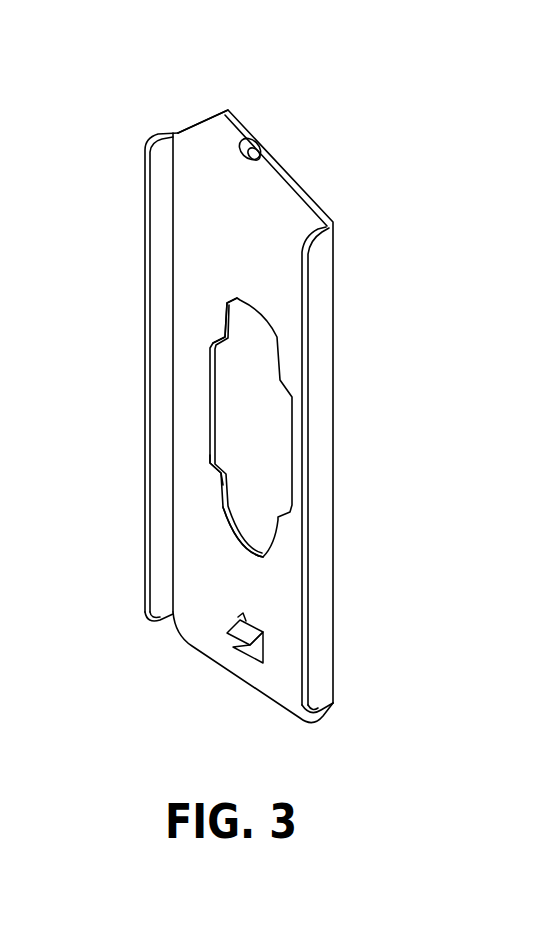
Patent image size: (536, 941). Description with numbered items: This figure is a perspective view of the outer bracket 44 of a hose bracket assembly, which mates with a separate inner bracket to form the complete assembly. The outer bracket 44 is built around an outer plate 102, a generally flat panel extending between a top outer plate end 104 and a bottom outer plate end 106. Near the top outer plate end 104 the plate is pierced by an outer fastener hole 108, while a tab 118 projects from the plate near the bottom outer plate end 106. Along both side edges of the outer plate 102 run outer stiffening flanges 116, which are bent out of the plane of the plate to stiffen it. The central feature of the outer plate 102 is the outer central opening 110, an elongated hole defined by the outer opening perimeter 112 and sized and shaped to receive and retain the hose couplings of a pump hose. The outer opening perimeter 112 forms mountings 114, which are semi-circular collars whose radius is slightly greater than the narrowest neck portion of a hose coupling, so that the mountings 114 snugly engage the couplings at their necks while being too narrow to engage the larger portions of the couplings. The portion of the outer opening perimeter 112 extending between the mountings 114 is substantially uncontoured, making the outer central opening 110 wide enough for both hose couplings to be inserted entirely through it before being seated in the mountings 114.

The outer bracket 44 is at (340, 100).
The outer plate 102 is at (292, 209).
The top outer plate end 104 is at (209, 133).
The bottom outer plate end 106 is at (193, 633).
The outer fastener hole 108 is at (253, 150).
The outer central opening 110 is at (226, 408).
The outer opening perimeter 112 is at (210, 465).
The mountings 114 is at (237, 298).
The outer stiffening flanges 116 is at (157, 183).
The tab 118 is at (240, 633).